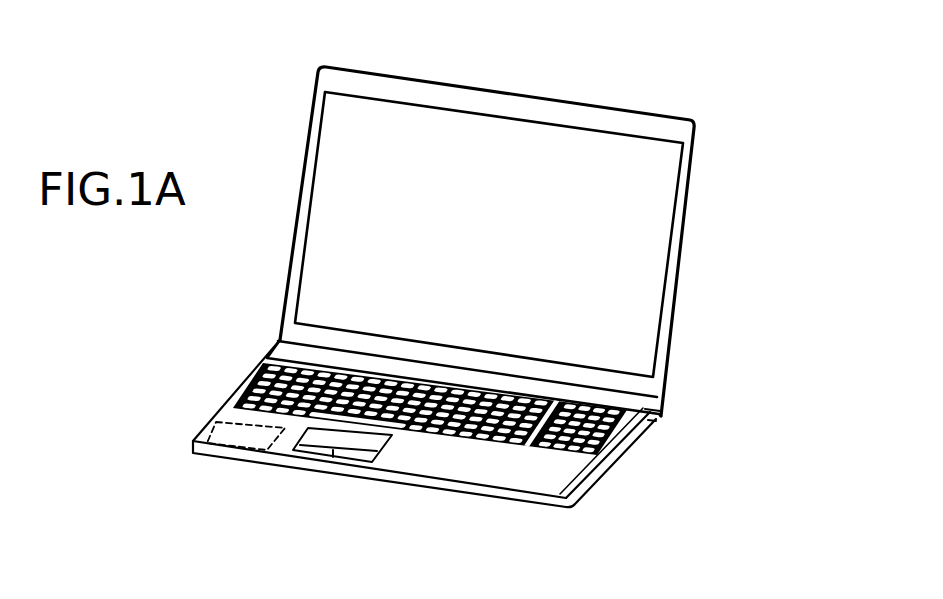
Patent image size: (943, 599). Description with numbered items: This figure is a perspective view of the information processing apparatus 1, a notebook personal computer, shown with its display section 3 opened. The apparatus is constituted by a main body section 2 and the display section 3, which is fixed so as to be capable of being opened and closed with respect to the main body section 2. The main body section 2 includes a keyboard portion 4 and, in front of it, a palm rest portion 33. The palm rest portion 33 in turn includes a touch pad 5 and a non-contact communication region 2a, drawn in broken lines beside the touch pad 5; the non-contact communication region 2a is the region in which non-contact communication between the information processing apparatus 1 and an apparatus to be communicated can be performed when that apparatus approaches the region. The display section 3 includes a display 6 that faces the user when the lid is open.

The information processing apparatus 1 is at (787, 60).
The main body section 2 is at (638, 476).
The non-contact communication region 2a is at (240, 429).
The display section 3 is at (723, 247).
The keyboard portion 4 is at (262, 363).
The touch pad 5 is at (325, 438).
The display 6 is at (337, 163).
The palm rest portion 33 is at (420, 458).